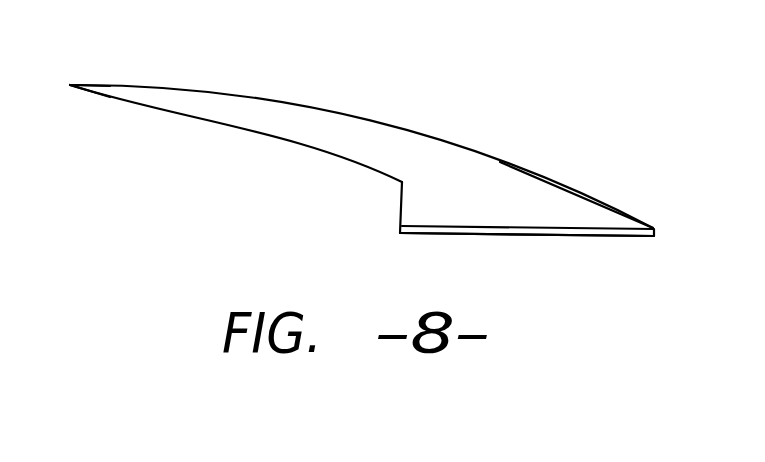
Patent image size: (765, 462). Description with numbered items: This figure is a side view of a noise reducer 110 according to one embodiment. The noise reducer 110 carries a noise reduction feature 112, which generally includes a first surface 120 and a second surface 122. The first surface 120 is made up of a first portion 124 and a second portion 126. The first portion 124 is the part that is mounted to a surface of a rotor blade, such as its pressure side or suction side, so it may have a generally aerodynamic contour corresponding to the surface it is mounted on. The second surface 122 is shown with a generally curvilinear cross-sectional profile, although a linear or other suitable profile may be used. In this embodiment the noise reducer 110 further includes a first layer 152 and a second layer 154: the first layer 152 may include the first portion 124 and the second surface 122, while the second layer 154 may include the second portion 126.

The noise reducer 110 is at (357, 161).
The noise reduction feature 112 is at (300, 110).
The first surface 120 is at (367, 174).
The second surface 122 is at (155, 88).
The first portion 124 is at (163, 113).
The second portion 126 is at (442, 237).
The first layer 152 is at (532, 192).
The second layer 154 is at (551, 233).